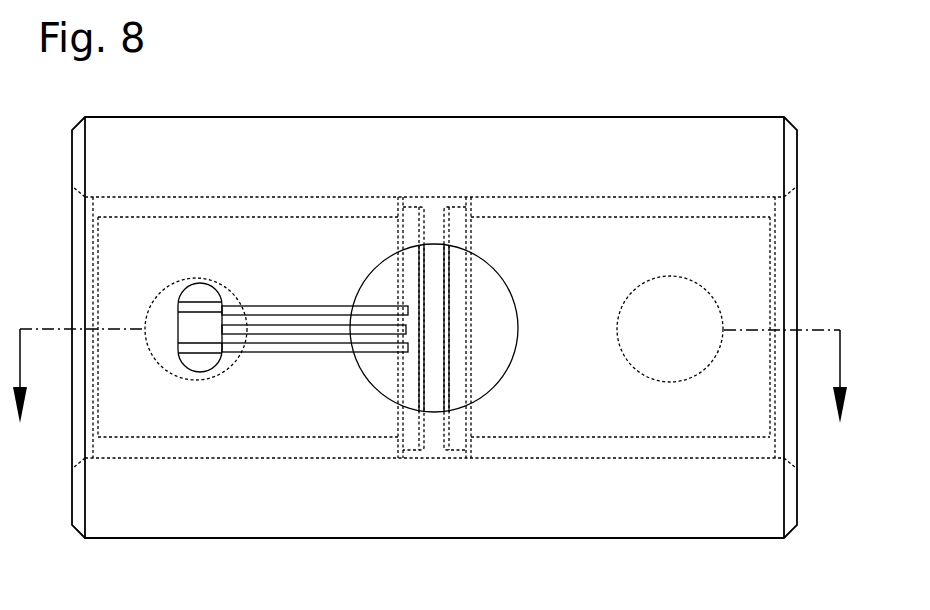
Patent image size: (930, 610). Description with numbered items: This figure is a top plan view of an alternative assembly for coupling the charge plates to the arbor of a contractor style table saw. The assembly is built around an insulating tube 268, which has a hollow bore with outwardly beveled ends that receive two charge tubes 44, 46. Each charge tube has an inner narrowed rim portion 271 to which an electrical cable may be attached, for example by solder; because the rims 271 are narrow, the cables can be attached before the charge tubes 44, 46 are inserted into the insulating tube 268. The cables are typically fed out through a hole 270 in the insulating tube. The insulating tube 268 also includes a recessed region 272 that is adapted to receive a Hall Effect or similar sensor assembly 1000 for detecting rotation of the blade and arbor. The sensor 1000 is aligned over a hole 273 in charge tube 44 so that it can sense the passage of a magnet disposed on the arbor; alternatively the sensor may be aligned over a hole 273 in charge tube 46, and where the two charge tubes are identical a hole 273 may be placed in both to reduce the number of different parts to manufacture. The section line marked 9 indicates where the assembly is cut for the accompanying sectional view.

The insulating tube 268 is at (506, 130).
The charge tube 44 is at (215, 237).
The charge tube 46 is at (645, 238).
The inner narrowed rim portion 271 is at (410, 270).
The hole 270 is at (510, 290).
The recessed region 272 is at (313, 322).
The sensor assembly 1000 is at (195, 325).
The hole 273 is at (212, 382).
The section line 9- 9 is at (429, 394).